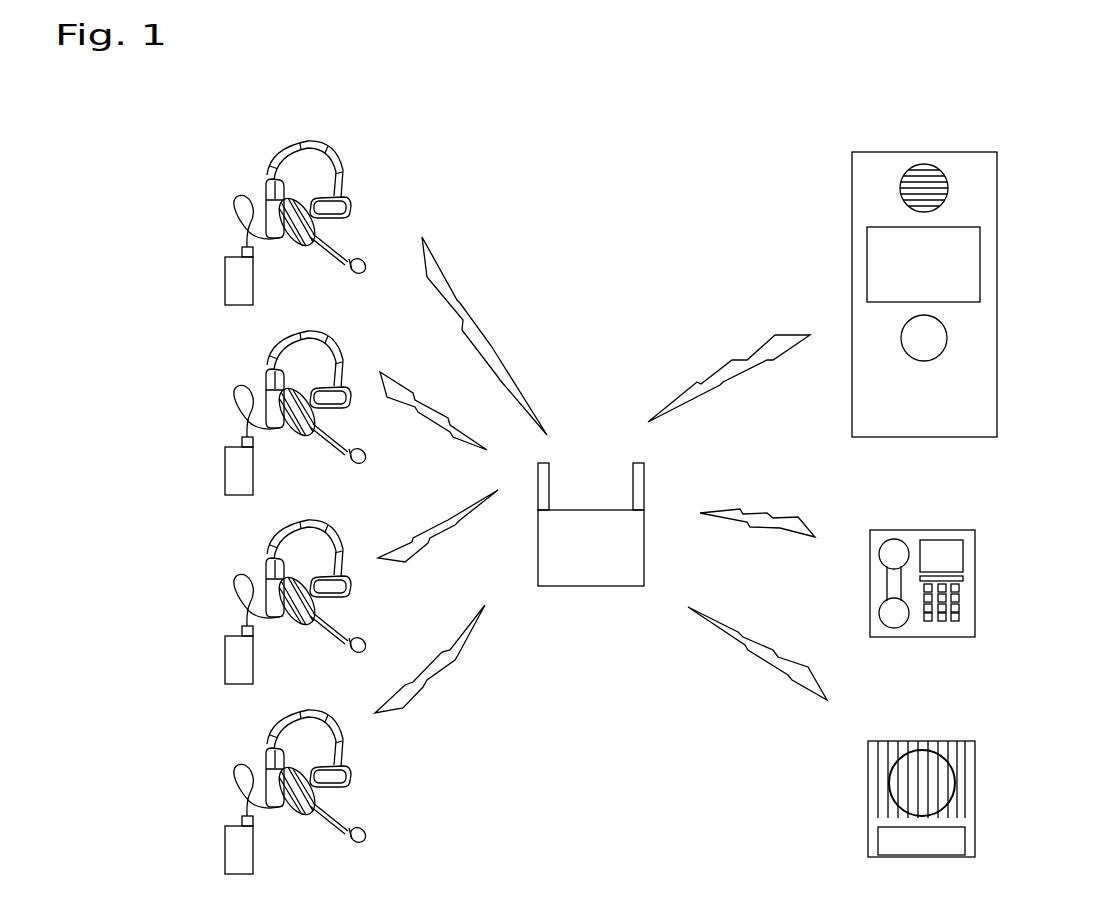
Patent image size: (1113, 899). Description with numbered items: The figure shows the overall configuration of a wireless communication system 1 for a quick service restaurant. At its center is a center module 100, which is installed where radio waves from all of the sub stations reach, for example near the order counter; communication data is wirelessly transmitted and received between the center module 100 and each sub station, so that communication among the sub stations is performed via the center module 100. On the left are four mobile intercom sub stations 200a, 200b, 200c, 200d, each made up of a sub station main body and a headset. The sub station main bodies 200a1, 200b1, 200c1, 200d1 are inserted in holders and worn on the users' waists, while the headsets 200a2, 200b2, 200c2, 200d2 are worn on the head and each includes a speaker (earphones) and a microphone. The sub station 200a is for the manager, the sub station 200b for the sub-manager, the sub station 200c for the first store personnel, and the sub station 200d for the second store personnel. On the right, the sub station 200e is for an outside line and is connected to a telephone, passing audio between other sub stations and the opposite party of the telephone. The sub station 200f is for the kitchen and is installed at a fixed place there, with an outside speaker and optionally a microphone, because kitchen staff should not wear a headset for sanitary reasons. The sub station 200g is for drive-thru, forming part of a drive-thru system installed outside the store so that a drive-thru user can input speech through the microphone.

The wireless communication system 1 is at (1025, 120).
The center module 100 is at (590, 587).
The sub station 200a is at (240, 166).
The sub station main body 200a1 is at (225, 280).
The headset 200a2 is at (343, 185).
The sub station 200b is at (282, 406).
The sub station main body 200b1 is at (185, 465).
The headset 200b2 is at (378, 374).
The sub station 200c is at (281, 595).
The sub station main body 200c1 is at (185, 654).
The headset 200c2 is at (378, 604).
The sub station 200d is at (281, 785).
The sub station main body 200d1 is at (185, 844).
The headset 200d2 is at (378, 794).
The sub station for an outside line 200e is at (977, 583).
The sub station for the kitchen 200f is at (975, 795).
The sub station for drive-thru 200g is at (997, 295).